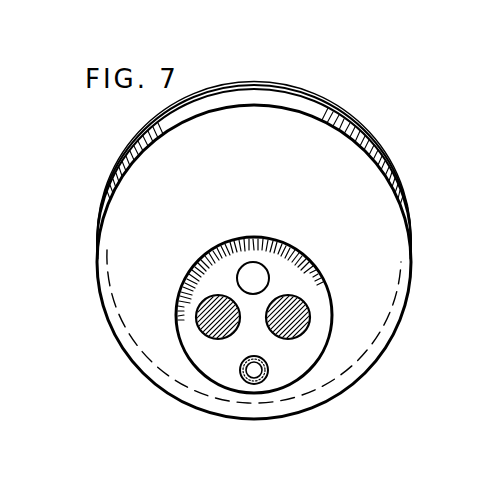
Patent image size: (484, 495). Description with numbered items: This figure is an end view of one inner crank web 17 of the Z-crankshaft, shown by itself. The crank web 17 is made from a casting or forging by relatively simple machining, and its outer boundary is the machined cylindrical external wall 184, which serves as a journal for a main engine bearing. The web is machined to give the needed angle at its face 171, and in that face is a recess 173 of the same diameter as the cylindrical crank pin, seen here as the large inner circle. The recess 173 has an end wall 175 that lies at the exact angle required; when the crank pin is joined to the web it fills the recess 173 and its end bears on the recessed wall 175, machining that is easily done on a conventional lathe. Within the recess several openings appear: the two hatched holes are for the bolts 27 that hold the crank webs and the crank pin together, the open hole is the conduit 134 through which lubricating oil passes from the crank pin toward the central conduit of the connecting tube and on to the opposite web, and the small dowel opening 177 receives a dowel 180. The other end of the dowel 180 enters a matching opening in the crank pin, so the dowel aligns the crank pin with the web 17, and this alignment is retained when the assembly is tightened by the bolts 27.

The inner crank web 17 is at (299, 182).
The bolt 27 is at (208, 316).
The conduit 134 is at (265, 278).
The face 171 is at (110, 248).
The recess 173 is at (313, 359).
The end wall 175 is at (313, 285).
The dowel opening 177 is at (241, 364).
The dowel 180 is at (252, 378).
The machined cylindrical external wall 184 is at (243, 85).